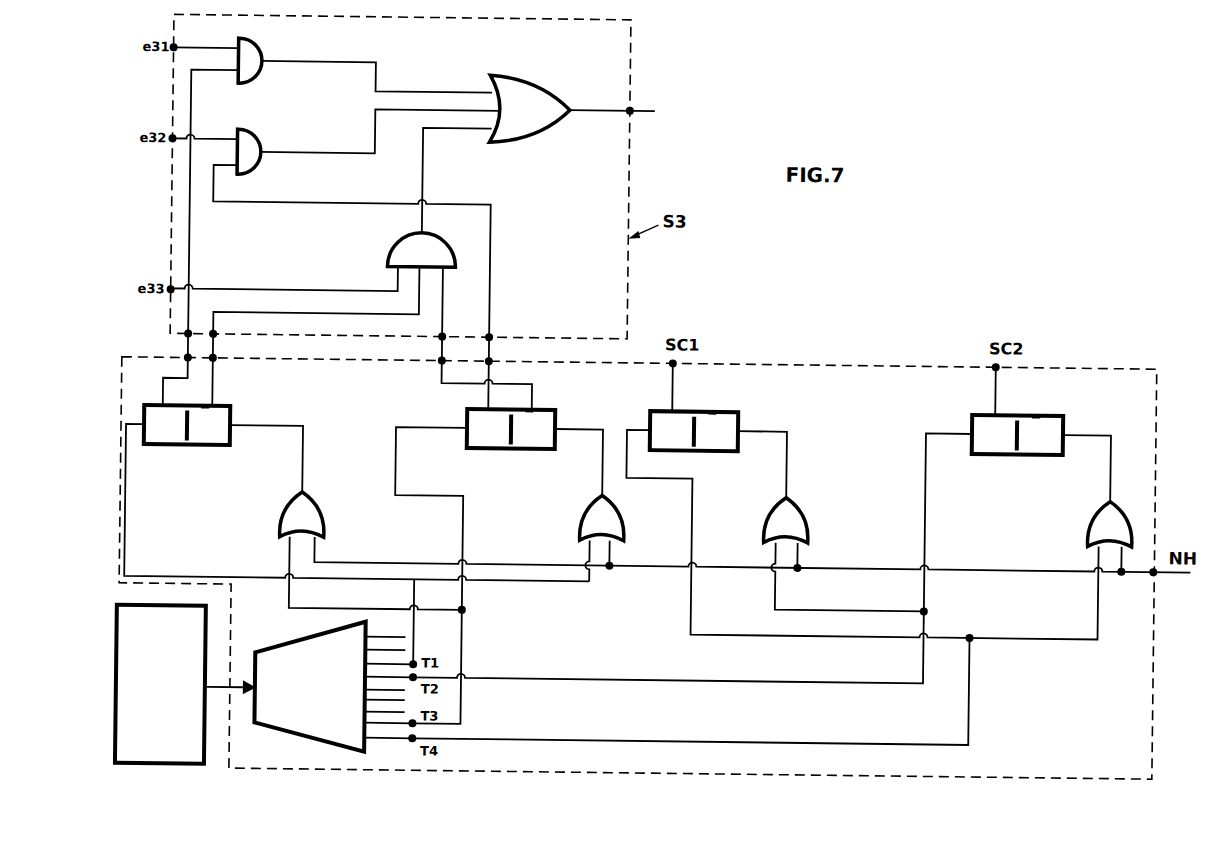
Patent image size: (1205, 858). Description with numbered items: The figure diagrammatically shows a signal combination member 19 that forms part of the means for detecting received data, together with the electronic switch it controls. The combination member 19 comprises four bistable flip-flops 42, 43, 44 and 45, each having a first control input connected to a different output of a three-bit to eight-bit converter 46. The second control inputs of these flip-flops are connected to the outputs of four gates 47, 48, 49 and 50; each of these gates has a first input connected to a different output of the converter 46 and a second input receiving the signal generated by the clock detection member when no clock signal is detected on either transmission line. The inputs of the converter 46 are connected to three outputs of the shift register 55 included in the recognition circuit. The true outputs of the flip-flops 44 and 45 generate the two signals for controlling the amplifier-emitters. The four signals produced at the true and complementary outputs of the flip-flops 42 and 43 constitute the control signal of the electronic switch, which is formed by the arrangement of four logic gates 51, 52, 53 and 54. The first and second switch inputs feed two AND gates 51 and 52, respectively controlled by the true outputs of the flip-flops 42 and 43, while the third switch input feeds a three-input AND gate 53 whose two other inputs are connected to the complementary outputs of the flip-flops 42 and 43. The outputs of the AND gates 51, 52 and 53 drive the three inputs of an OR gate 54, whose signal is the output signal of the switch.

The combination member 19 is at (1052, 356).
The bistable flip-flop 42 is at (198, 455).
The bistable flip-flop 43 is at (522, 454).
The bistable flip-flop 44 is at (727, 456).
The bistable flip-flop 45 is at (1023, 457).
The 3 bits/8 bits converter 46 is at (286, 649).
The gate 47 is at (283, 517).
The gate 48 is at (584, 514).
The gate 49 is at (768, 516).
The gate 50 is at (1091, 522).
The AND gate 51 is at (262, 54).
The AND gate 52 is at (259, 145).
The AND gate 53 is at (387, 240).
The OR gate 54 is at (535, 136).
The shift register 55 is at (118, 612).